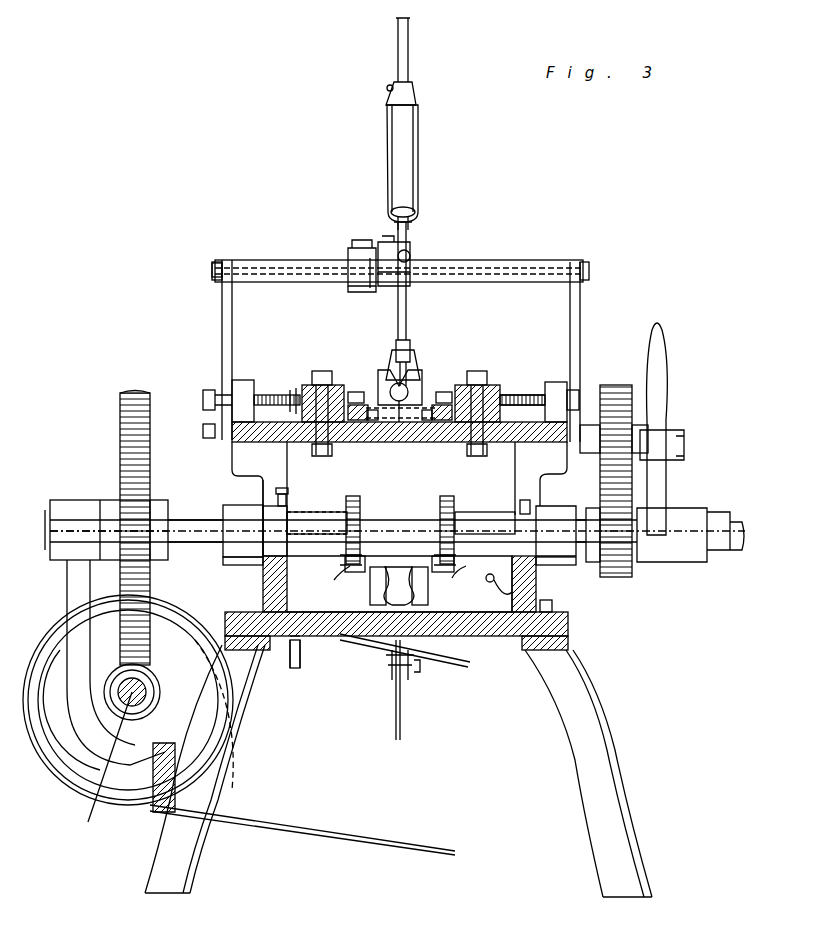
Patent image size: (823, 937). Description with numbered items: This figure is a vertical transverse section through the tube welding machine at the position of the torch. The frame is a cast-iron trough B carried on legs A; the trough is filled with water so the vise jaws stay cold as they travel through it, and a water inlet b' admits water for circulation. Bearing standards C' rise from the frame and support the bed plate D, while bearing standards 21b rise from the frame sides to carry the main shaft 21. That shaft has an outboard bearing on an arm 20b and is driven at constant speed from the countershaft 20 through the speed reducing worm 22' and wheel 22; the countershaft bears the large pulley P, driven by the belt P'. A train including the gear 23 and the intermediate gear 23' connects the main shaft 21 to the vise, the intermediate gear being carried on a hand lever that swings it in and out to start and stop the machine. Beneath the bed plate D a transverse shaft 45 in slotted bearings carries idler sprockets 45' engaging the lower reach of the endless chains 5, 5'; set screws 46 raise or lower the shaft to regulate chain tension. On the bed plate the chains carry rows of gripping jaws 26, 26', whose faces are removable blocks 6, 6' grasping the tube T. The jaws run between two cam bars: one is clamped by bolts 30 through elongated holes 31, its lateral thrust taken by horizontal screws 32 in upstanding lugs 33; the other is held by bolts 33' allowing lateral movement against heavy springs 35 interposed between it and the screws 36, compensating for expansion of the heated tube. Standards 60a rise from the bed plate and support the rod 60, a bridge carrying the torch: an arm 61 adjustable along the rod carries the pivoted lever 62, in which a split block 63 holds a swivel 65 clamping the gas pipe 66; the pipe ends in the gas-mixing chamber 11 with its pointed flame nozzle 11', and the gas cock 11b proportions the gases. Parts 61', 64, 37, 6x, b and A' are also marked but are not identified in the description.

The gas cock 11b is at (392, 88).
The horizontal rod or shaft 60 is at (496, 276).
The standards 60a is at (222, 328).
The arm 61 is at (349, 258).
The bracket base 61' is at (353, 304).
The lever 62 is at (376, 292).
The split block 63 is at (412, 258).
The block base 64 is at (385, 288).
The swivel 65 is at (412, 250).
The gas supply pipe 66 is at (407, 310).
The gas-mixing chamber 11 is at (421, 344).
The flame nozzle 11' is at (420, 367).
The bed plate D is at (512, 444).
The block 37 is at (244, 380).
The screws 36 is at (203, 398).
The heavy springs 35 is at (284, 412).
The bolts 33' is at (320, 402).
The endless chain 5 is at (345, 491).
The gripping block 6 is at (379, 477).
The clamp screw 6x is at (394, 388).
The gripping block 6' is at (447, 477).
The bolts 30 is at (492, 386).
The elongated holes 31 is at (496, 382).
The horizontal screws 32 is at (540, 396).
The upstanding lugs 33 is at (562, 379).
The tube T is at (398, 442).
The gripping jaws 26' is at (417, 454).
The endless chain 5' is at (447, 508).
The trough B is at (512, 636).
The housing b is at (435, 615).
The water inlet b' is at (542, 592).
The set screws 46 is at (284, 492).
The main shaft 21 is at (192, 520).
The bearing standards 21b is at (240, 564).
The bearing standards C' is at (373, 508).
The transverse shaft 45 is at (397, 517).
The idler sprockets 45' is at (395, 522).
The gripping jaws 26 is at (399, 524).
The worm wheel 22 is at (148, 528).
The speed reducing worm 22' is at (212, 726).
The arm 20b is at (62, 500).
The pulley P is at (128, 702).
The countershaft 20 is at (109, 765).
The belt P' is at (302, 833).
The leg A' is at (370, 770).
The legs A is at (592, 773).
The gear 23 is at (660, 499).
The intermediate gear 23' is at (614, 408).